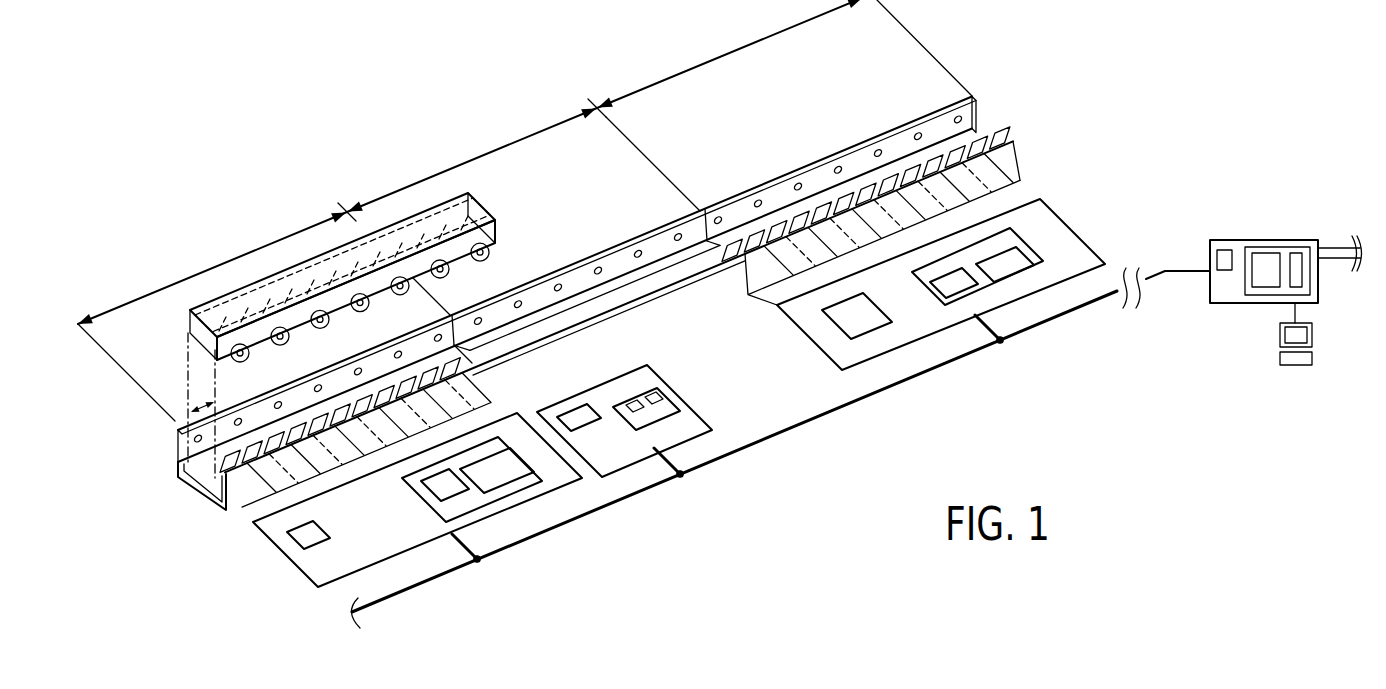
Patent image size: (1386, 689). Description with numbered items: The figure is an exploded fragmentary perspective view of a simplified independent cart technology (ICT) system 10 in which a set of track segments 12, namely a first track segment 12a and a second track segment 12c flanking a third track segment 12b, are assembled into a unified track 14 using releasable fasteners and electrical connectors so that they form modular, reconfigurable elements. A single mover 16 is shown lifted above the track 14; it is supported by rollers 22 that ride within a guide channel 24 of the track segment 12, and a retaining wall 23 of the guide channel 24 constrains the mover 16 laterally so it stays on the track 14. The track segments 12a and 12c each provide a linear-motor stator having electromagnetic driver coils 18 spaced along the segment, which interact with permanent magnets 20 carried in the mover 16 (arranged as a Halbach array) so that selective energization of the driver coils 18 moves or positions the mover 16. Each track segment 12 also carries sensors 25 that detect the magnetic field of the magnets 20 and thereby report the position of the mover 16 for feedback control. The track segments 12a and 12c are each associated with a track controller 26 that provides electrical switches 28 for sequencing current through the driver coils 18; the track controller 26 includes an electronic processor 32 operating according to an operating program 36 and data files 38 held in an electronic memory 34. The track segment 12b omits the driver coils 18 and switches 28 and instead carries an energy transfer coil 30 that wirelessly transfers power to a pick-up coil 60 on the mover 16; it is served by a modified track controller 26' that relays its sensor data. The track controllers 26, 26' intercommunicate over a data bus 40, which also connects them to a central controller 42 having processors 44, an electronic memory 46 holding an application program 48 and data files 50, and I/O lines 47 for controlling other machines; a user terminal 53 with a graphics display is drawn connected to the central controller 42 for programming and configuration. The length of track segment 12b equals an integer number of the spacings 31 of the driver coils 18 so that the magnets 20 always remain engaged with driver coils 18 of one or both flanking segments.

The independent cart technology (ICT) system 10 is at (1074, 85).
The track segments 12 is at (222, 405).
The first track segment 12a is at (216, 312).
The third track segment 12b is at (523, 207).
The second track segment 12c is at (784, 56).
The unified track 14 is at (990, 78).
The mover 16 is at (188, 322).
The electromagnetic driver coils 18 is at (245, 458).
The permanent magnets 20 is at (275, 272).
The rollers 22 is at (450, 270).
The retaining wall 23 is at (1017, 161).
The guide channel 24 is at (1000, 128).
The sensors 25 is at (357, 369).
The track controller 26 is at (676, 405).
The modified track controller 26' is at (624, 402).
The electrical switches 28 is at (253, 523).
The energy transfer coil 30 is at (627, 286).
The spacings 31 is at (156, 428).
The electronic processor 32 is at (290, 536).
The electronic memory 34 is at (490, 510).
The operating program 36 is at (413, 489).
The data files 38 is at (506, 489).
The data bus 40 is at (1188, 271).
The central controller 42 is at (1265, 241).
The processors 44 is at (1224, 250).
The electronic memory 46 is at (1280, 297).
The I/O lines 47 is at (1338, 248).
The application program 48 is at (1253, 275).
The data files 50 is at (1303, 277).
The display 53 is at (1313, 336).
The pick-up coil 60 is at (475, 191).